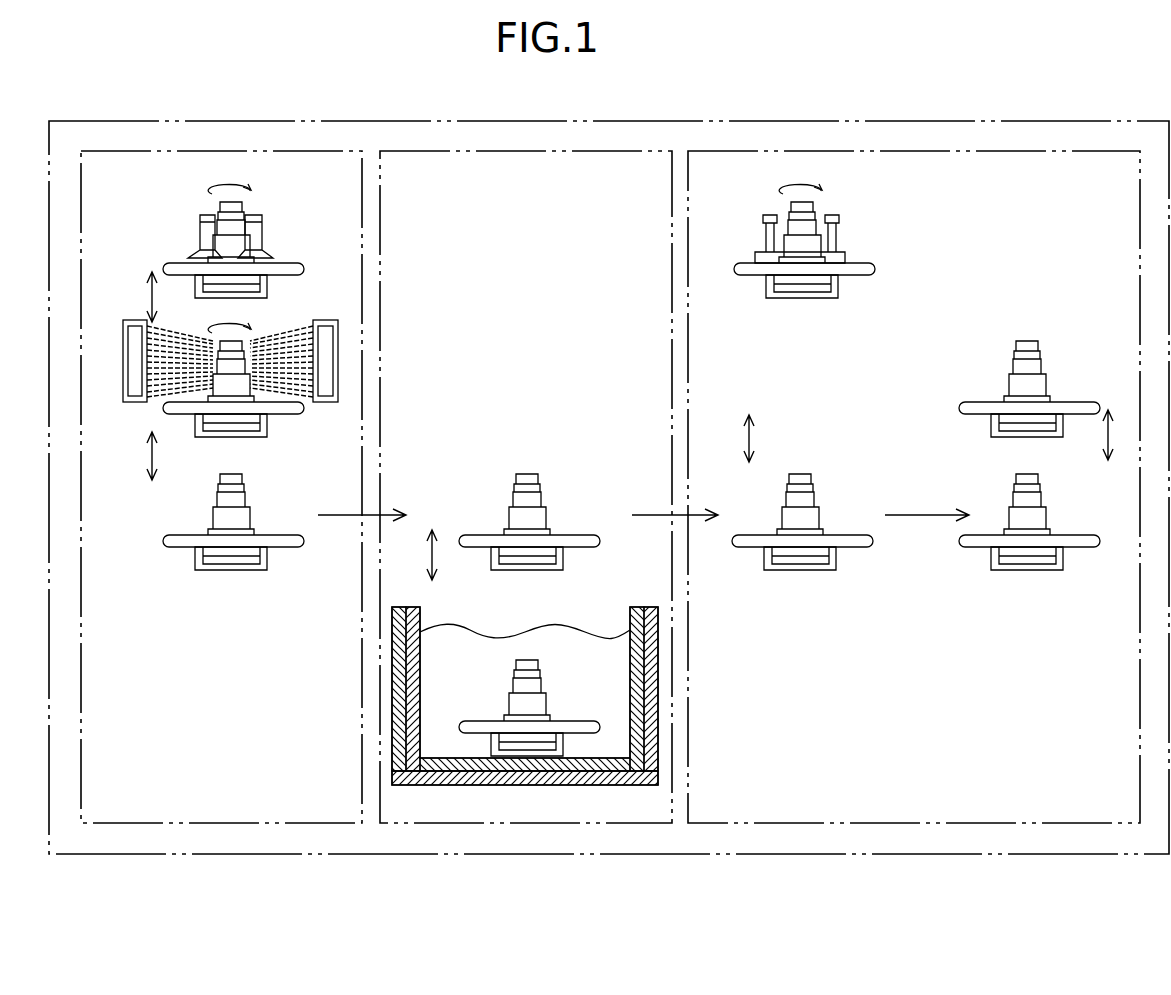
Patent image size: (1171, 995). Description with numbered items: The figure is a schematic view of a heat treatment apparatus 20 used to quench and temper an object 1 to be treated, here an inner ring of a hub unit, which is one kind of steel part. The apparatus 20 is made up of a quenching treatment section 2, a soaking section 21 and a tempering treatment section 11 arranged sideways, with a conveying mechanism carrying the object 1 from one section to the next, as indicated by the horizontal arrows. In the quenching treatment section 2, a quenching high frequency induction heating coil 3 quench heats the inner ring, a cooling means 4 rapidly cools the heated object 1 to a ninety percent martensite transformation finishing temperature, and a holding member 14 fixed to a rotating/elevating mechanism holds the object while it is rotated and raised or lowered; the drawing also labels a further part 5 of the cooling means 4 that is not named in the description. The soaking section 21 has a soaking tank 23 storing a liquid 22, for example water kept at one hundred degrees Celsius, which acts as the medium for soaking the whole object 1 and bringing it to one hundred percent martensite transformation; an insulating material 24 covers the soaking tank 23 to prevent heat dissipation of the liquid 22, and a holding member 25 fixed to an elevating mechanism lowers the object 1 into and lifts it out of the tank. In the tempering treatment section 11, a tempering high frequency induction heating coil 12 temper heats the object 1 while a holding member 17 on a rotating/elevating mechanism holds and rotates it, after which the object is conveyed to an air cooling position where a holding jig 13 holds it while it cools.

The heat treatment apparatus 20 is at (705, 105).
The quenching treatment section 2 is at (237, 762).
The soaking section 21 is at (512, 797).
The tempering treatment section 11 is at (925, 752).
The object to be treated 1 is at (240, 249).
The quenching high frequency induction heating coil 3 is at (206, 246).
The cooling means 4 is at (326, 320).
The bristles 5 is at (279, 350).
The holding member 14 is at (268, 430).
The holding member 25 is at (526, 569).
The holding member 17 is at (840, 286).
The tempering high frequency induction heating coil 12 is at (834, 246).
The holding jig 13 is at (1010, 433).
The soaking tank 23 is at (637, 606).
The insulating material 24 is at (590, 783).
The liquid 22 is at (573, 650).